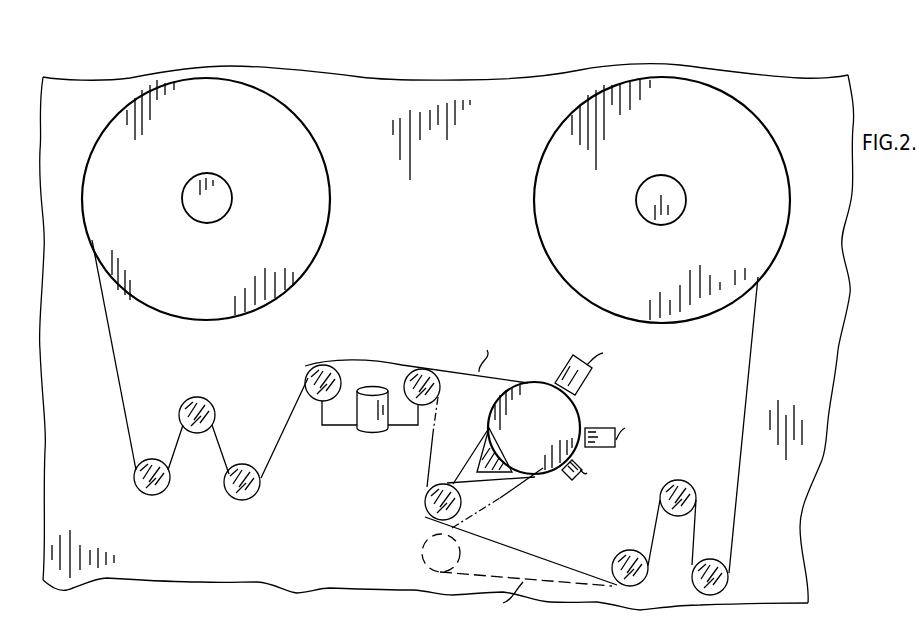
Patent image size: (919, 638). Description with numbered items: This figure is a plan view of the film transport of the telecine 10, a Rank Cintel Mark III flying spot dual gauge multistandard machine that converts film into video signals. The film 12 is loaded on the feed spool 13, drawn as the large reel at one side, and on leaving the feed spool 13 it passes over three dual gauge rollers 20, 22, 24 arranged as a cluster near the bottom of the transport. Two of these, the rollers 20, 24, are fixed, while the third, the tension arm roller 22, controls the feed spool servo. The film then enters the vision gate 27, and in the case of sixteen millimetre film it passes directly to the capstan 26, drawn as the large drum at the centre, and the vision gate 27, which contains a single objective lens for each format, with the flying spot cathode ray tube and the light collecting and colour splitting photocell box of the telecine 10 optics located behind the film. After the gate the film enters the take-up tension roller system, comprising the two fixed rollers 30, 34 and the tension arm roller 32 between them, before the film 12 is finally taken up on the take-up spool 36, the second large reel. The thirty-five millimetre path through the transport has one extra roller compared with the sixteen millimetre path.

The telecine 10 is at (229, 67).
The film 12 is at (762, 333).
The feed spool 13 is at (678, 133).
The dual gauge roller 20 is at (729, 577).
The tension arm roller 22 is at (692, 492).
The dual gauge roller 24 is at (637, 580).
The capstan 26 is at (548, 432).
The vision gate 27 is at (372, 380).
The fixed roller 30 is at (245, 497).
The tension arm roller 32 is at (181, 405).
The fixed roller 34 is at (147, 494).
The take-up spool 36 is at (140, 207).